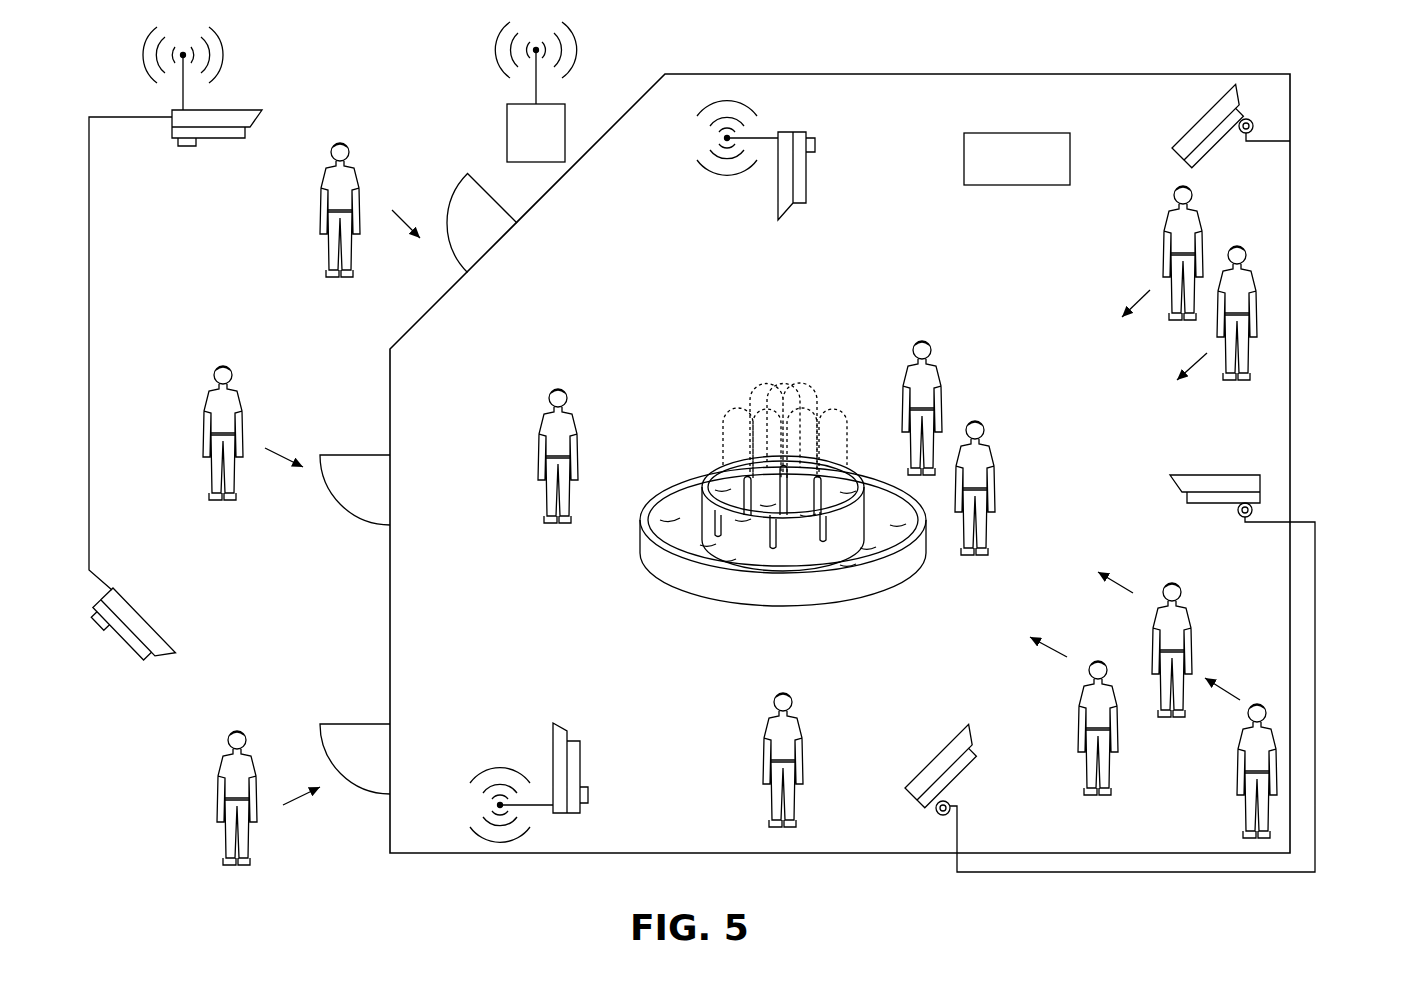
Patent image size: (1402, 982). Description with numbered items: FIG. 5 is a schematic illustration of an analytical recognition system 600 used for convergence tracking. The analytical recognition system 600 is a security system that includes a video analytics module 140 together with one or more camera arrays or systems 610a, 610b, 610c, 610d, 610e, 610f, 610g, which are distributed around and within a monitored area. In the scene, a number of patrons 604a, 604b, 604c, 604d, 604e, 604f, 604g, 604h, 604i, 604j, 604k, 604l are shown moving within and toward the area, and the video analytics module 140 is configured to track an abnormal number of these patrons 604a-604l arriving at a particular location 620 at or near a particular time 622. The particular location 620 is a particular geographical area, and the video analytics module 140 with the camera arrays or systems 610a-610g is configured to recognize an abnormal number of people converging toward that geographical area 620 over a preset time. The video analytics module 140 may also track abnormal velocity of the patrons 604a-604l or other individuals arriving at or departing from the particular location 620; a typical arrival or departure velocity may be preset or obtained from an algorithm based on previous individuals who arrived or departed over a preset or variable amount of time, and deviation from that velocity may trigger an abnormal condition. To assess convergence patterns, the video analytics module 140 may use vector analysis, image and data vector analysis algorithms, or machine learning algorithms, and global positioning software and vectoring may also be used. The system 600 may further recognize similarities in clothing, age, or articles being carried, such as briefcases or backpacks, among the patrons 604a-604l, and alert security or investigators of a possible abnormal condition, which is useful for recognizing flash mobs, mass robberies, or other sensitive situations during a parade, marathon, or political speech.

The analytical recognition system 600 is at (1302, 60).
The video analytics module 140 is at (507, 122).
The patron 604a is at (320, 178).
The patron 604b is at (205, 398).
The patron 604c is at (222, 766).
The patron 604d is at (540, 418).
The patron 604e is at (766, 724).
The patron 604f is at (995, 455).
The patron 604g is at (943, 375).
The patron 604h is at (1205, 220).
The patron 604i is at (1258, 279).
The patron 604j is at (1082, 693).
The patron 604k is at (1152, 617).
The patron 604l is at (1240, 740).
The camera array 610a is at (1198, 128).
The camera array 610b is at (786, 132).
The camera array 610c is at (243, 110).
The camera array 610d is at (143, 615).
The camera array 610e is at (580, 775).
The camera array 610f is at (937, 762).
The camera array 610g is at (1240, 475).
The particular location 620 is at (708, 378).
The particular time 622 is at (1040, 133).